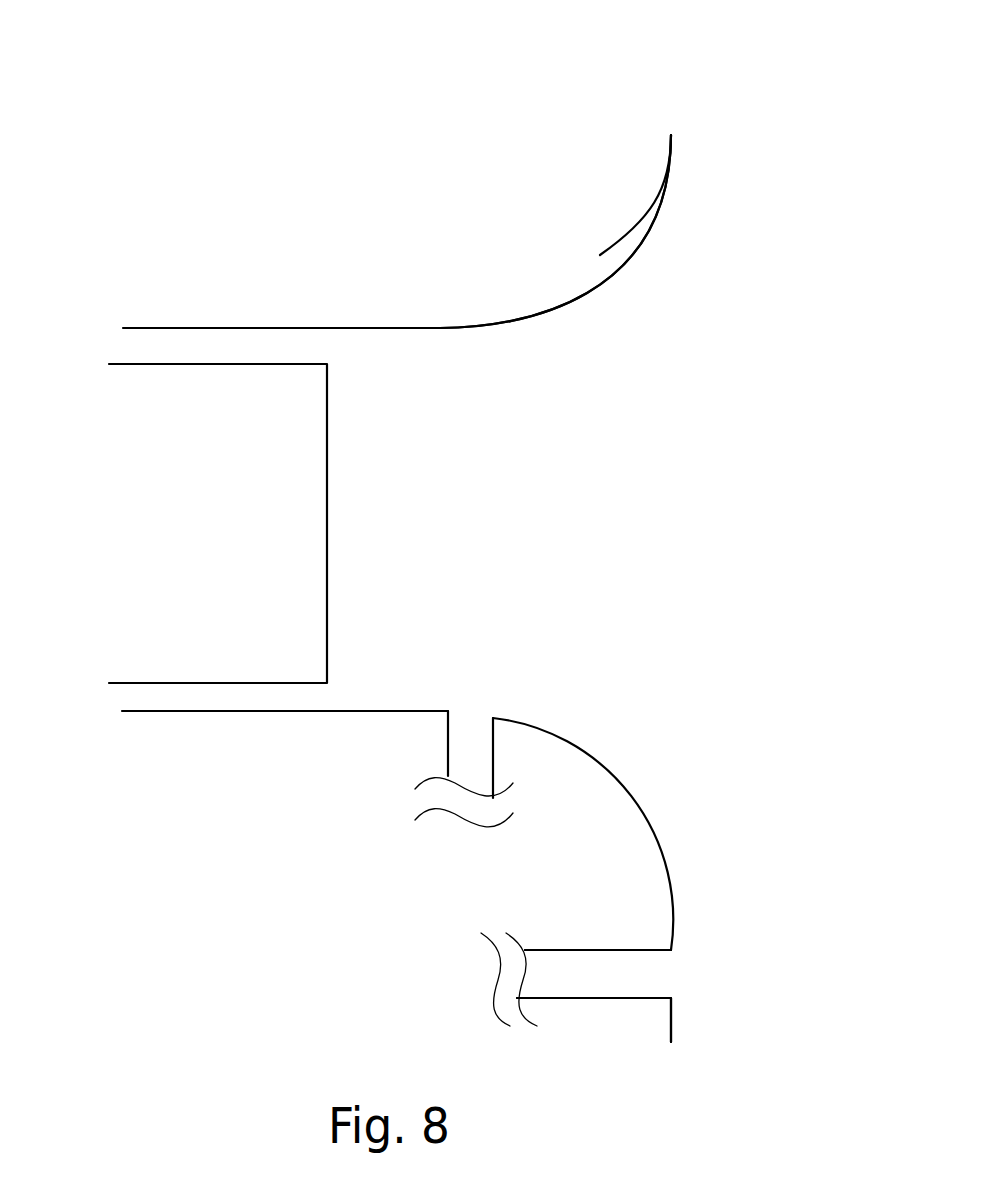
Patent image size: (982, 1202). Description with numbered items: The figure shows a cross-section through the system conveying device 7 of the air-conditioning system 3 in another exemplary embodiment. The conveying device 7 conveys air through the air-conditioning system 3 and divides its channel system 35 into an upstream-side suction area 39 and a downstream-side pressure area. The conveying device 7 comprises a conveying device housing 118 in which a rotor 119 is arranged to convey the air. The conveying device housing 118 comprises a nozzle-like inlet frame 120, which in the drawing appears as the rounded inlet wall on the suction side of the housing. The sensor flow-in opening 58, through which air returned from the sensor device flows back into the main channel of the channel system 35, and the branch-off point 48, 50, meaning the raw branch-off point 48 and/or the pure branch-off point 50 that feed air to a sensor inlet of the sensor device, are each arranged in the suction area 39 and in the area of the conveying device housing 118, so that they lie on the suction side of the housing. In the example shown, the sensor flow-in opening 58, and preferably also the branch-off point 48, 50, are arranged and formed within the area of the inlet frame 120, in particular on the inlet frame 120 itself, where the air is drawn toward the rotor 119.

The air-conditioning system 3 is at (752, 82).
The system conveying device 7 is at (181, 176).
The channel system 35 is at (708, 262).
The suction area 39 is at (438, 313).
The rotor 119 is at (146, 364).
The conveying device housing 118 is at (686, 449).
The sensor flow-in opening 58 is at (463, 713).
The inlet frame 120 is at (670, 808).
The raw branch-off point 48 is at (653, 977).
The pure branch-off point 50 is at (738, 982).